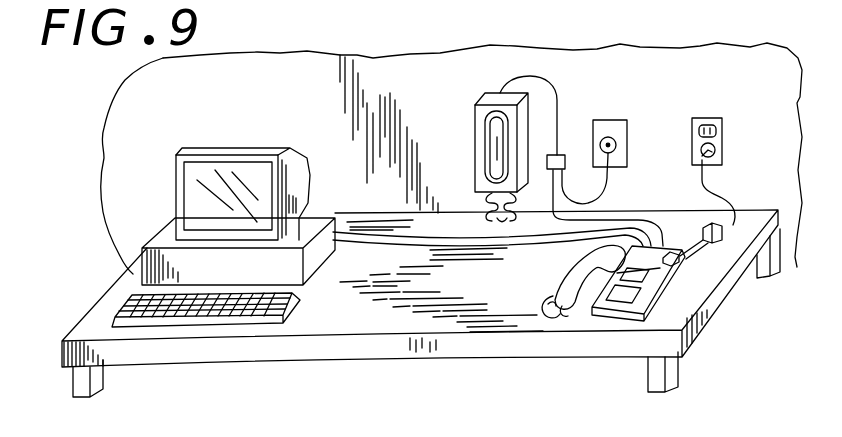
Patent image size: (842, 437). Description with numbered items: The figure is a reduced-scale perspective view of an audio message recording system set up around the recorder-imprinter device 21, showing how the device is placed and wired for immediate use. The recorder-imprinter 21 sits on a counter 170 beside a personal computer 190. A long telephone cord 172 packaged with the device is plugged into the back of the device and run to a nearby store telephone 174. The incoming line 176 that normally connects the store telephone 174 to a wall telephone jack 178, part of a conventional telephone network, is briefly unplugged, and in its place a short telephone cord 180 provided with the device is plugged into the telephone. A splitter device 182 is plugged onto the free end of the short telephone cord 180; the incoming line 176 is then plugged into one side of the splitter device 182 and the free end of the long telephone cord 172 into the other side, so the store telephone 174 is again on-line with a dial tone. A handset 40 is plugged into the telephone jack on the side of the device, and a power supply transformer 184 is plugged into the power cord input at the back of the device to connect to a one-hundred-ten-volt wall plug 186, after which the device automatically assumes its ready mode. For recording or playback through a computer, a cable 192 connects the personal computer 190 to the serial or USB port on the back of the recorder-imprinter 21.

The counter 170 is at (318, 330).
The long telephone cord 172 is at (630, 216).
The store telephone 174 is at (487, 130).
The incoming line 176 is at (607, 180).
The wall telephone jack 178 is at (624, 120).
The short telephone cord 180 is at (556, 87).
The splitter device 182 is at (563, 155).
The power supply transformer 184 is at (753, 208).
The 110-volt wall plug 186 is at (718, 118).
The personal computer 190 is at (162, 241).
The cable 192 is at (369, 242).
The handset 40 is at (578, 270).
The recorder-imprinter device 21 is at (608, 312).